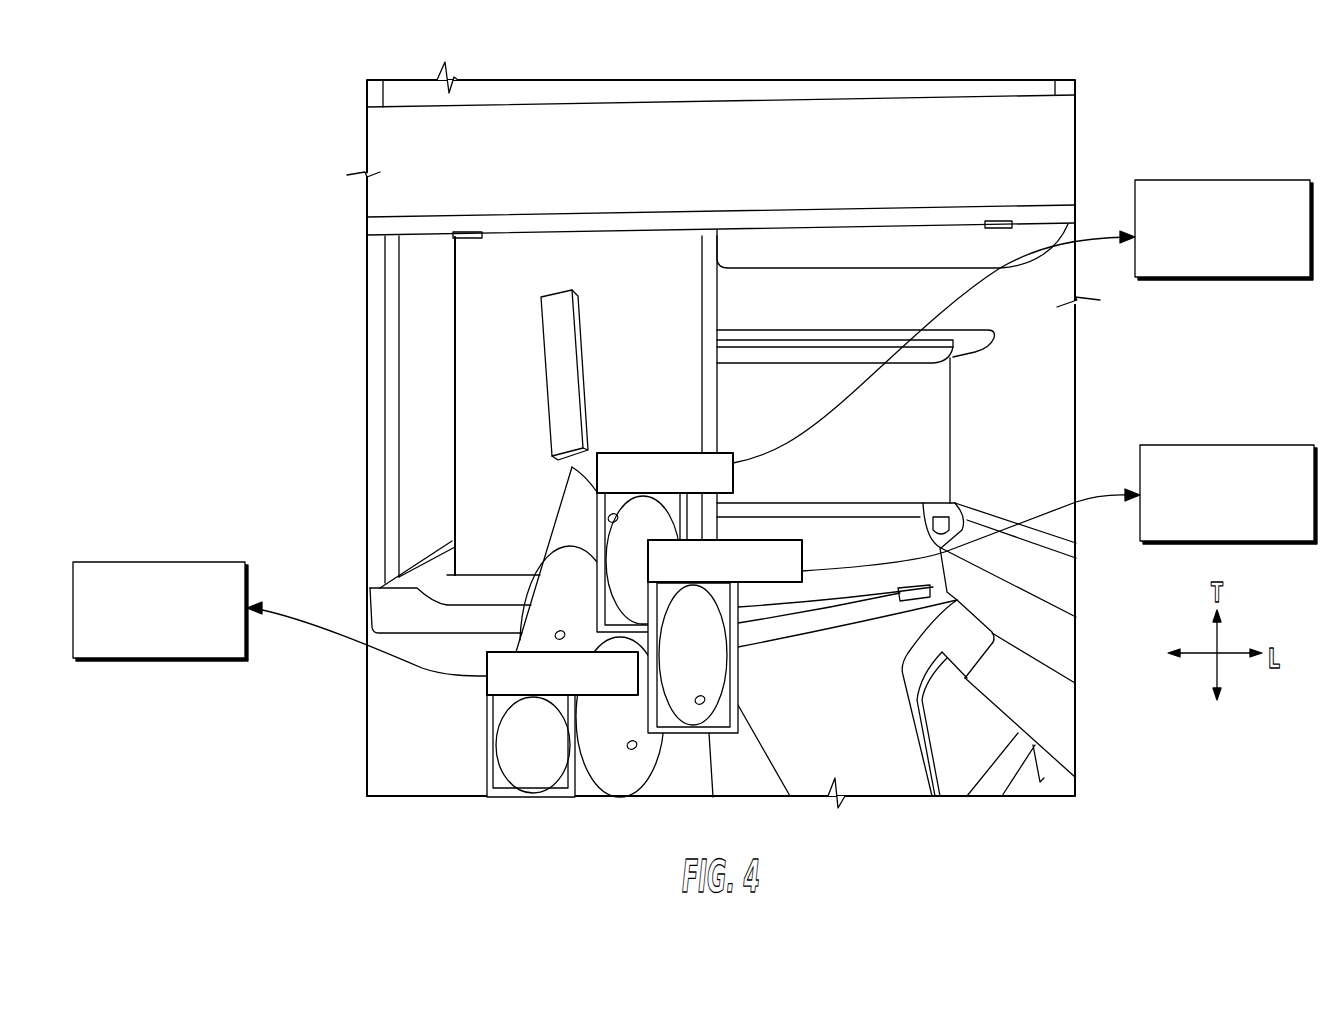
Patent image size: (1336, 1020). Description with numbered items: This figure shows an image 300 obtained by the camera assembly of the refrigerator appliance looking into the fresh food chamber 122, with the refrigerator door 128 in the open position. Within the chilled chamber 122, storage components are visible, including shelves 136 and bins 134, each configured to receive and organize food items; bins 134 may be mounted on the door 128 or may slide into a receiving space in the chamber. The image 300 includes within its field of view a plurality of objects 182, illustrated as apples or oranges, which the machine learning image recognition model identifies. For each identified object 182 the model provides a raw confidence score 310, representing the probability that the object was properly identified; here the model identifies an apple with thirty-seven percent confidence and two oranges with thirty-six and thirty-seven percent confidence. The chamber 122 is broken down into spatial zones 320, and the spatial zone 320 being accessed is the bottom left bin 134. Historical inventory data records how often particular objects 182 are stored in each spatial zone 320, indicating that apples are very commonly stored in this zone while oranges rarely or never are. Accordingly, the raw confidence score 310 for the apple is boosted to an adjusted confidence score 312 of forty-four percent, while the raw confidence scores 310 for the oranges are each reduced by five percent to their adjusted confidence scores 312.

The fresh food chamber 122 is at (1045, 368).
The refrigerator door 128 is at (1050, 723).
The bin 134 is at (433, 383).
The shelf 136 is at (425, 92).
The object 182 is at (627, 543).
The image 300 is at (1068, 422).
The raw confidence score 310 is at (733, 476).
The adjusted confidence score 312 is at (1253, 178).
The spatial zone 320 is at (648, 290).